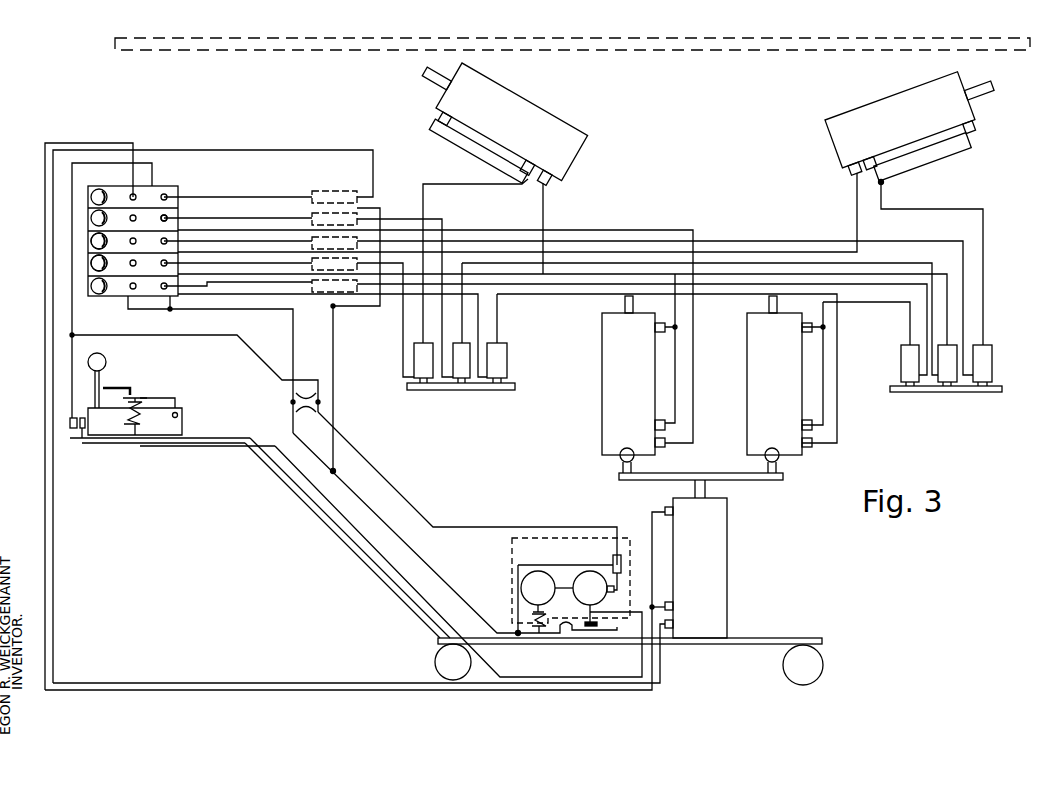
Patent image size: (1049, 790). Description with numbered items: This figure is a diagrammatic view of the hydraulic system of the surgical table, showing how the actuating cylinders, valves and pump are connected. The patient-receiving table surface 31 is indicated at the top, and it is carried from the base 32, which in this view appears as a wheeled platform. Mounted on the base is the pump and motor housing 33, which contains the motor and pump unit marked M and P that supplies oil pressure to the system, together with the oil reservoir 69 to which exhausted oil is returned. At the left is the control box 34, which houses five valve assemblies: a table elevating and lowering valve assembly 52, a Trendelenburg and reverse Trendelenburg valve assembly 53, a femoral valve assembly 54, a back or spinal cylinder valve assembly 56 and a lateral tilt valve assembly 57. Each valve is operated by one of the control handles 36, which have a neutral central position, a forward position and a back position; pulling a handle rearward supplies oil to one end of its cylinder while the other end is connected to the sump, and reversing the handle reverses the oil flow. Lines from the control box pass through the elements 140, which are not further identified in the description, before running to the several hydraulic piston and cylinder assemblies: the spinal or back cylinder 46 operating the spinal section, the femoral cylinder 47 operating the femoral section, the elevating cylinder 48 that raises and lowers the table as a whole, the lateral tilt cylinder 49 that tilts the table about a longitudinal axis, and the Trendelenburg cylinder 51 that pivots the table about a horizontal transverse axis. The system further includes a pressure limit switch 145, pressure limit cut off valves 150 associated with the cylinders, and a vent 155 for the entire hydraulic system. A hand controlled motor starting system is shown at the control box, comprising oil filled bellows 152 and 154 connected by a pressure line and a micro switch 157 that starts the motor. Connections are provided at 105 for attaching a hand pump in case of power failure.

The table surface 31 is at (662, 25).
The base 32 is at (735, 638).
The pump and motor housing 33 is at (573, 537).
The control box 34 is at (168, 369).
The control handles 36 is at (97, 191).
The hydraulic piston and cylinder assembly 46 is at (545, 97).
The hydraulic piston and cylinder assembly 47 is at (874, 90).
The hydraulic piston and cylinder assembly 48 is at (732, 523).
The cylinder and piston assembly 49 is at (779, 384).
The piston and cylinder assembly 51 is at (633, 384).
The table elevating and lowering valve assembly 52 is at (174, 190).
The Trendelenburg and reverse Trendelenburg valve assembly 53 is at (170, 214).
The femoral valve assembly 54 is at (88, 239).
The back or spinal cylinder valve assembly 56 is at (88, 262).
The lateral tilt valve assembly 57 is at (118, 293).
The oil reservoir 69 is at (602, 632).
The hand pump connections 105 is at (70, 422).
The resistors 140 is at (347, 190).
The pressure limit switch 145 is at (618, 555).
The pressure limit cut off valves 150 is at (498, 372).
The oil filled bellows 152 is at (137, 415).
The oil filled bellows 154 is at (533, 623).
The vent 155 is at (318, 397).
The micro switch 157 is at (537, 613).